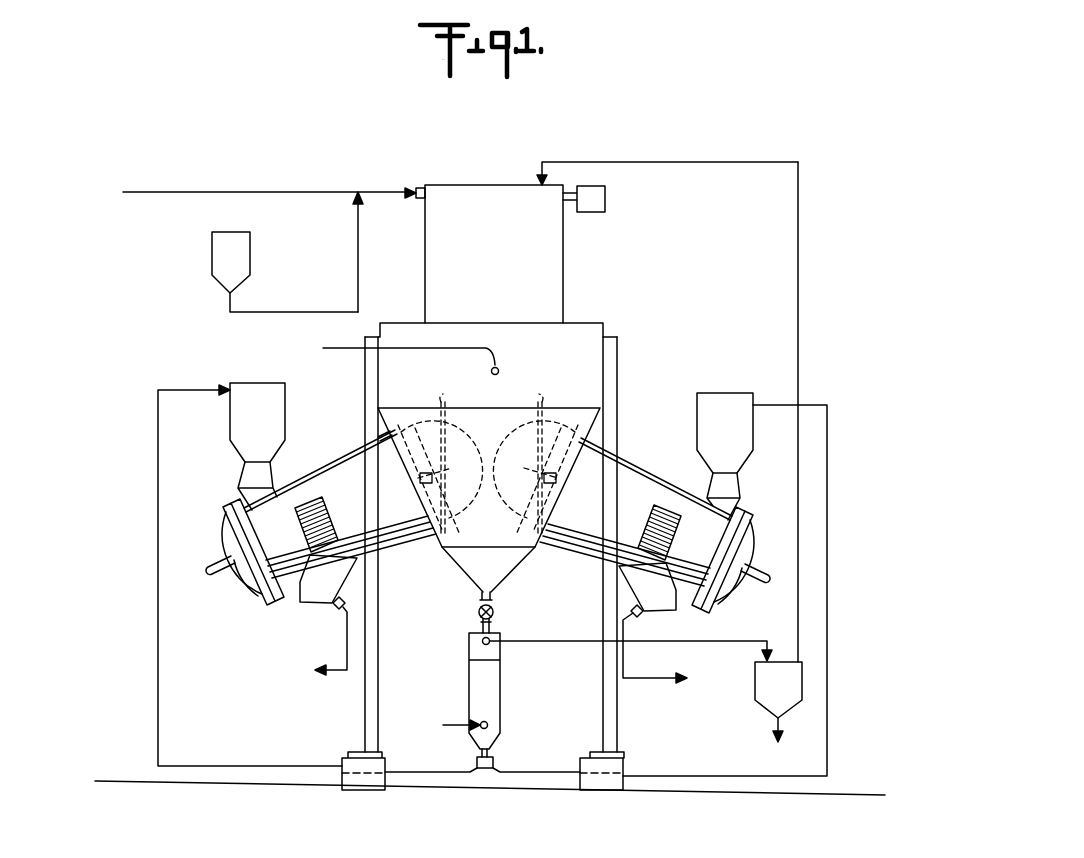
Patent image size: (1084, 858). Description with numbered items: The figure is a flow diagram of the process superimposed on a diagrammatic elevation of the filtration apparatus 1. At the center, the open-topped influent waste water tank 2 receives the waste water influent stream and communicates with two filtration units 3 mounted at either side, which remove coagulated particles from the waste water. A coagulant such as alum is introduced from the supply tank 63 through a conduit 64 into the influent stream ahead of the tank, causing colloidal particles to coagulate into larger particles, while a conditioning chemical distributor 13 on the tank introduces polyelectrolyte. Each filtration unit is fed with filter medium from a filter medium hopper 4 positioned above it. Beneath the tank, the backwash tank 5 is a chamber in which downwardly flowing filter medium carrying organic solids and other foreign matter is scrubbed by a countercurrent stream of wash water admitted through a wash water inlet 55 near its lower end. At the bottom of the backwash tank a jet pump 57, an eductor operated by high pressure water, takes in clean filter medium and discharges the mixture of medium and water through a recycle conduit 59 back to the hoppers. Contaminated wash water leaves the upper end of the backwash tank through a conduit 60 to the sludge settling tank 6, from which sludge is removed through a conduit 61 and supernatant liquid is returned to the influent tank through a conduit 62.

The filtration apparatus 1 is at (644, 376).
The influent waste water tank 2 is at (588, 323).
The filtration unit 3 is at (878, 599).
The filter medium hopper 4 is at (745, 396).
The backwash tank 5 is at (490, 680).
The sludge settling tank 6 is at (803, 683).
The conditioning chemical distributor 13 is at (500, 373).
The wash water inlet 55 is at (495, 707).
The jet pump 57 is at (485, 770).
The recycle conduit 59 is at (158, 658).
The conduit 60 is at (548, 640).
The conduit 61 is at (772, 716).
The conduit 62 is at (798, 272).
The supply tank 63 is at (224, 248).
The conduit 64 is at (358, 255).